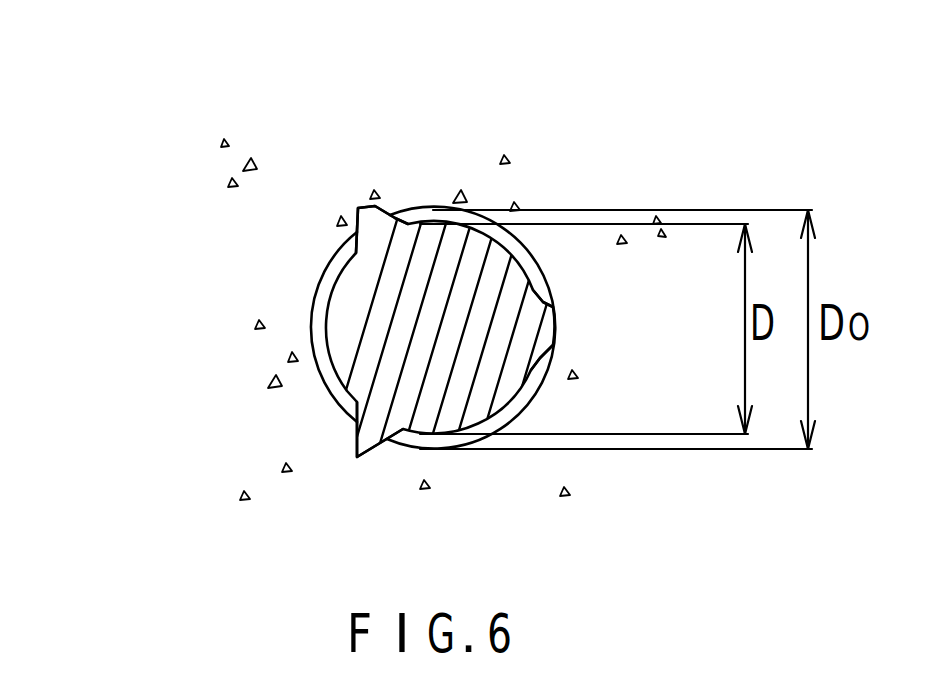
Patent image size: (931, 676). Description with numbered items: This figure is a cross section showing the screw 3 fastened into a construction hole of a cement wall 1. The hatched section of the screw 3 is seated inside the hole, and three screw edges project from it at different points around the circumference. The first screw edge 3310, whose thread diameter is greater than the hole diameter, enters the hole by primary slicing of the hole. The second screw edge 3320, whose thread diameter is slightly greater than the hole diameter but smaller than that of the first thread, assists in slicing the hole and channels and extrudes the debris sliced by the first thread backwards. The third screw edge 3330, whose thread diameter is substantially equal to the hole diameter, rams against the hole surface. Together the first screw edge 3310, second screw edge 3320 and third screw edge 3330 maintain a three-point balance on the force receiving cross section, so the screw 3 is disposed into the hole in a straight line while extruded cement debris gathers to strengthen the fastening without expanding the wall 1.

The cement wall 1 is at (270, 297).
The screw 3 is at (446, 247).
The first screw edge 3310 is at (363, 438).
The second screw edge 3320 is at (363, 212).
The third screw edge 3330 is at (543, 327).